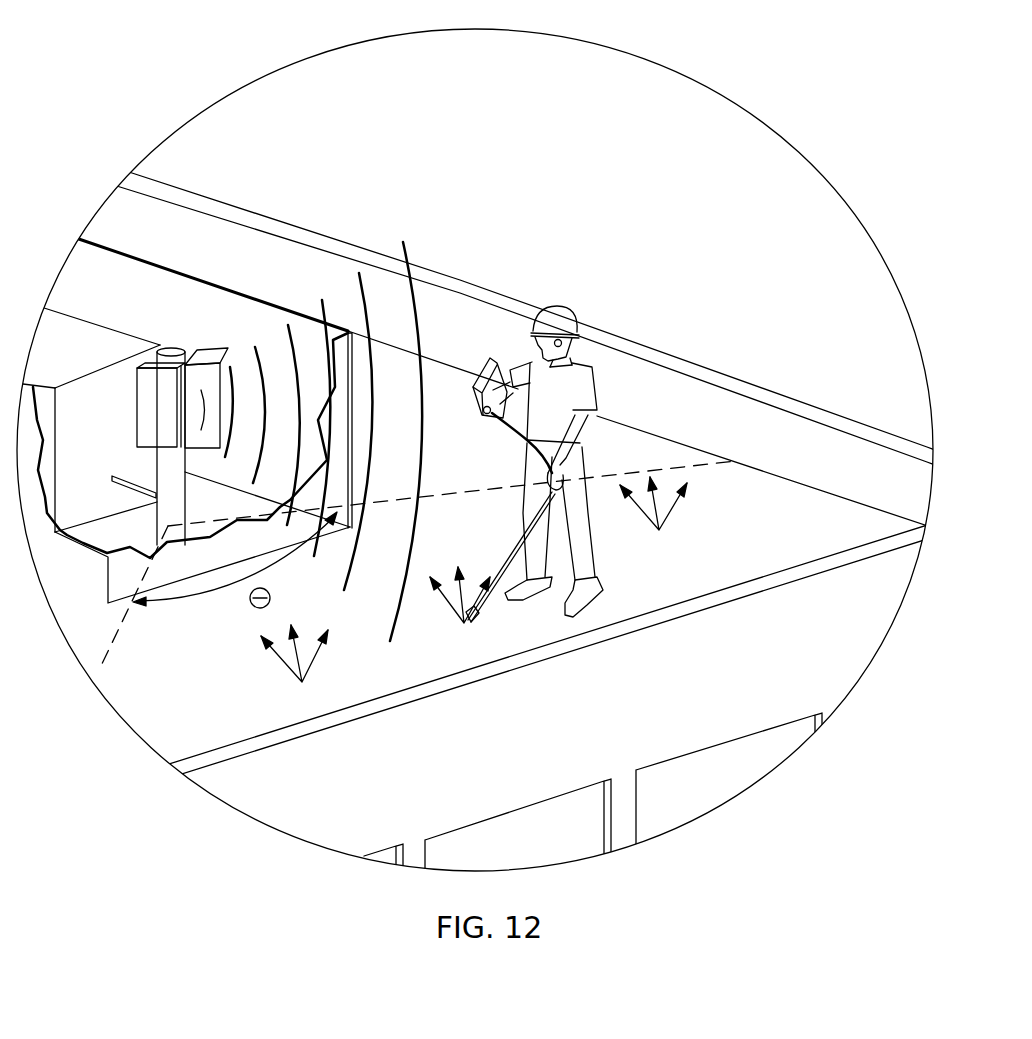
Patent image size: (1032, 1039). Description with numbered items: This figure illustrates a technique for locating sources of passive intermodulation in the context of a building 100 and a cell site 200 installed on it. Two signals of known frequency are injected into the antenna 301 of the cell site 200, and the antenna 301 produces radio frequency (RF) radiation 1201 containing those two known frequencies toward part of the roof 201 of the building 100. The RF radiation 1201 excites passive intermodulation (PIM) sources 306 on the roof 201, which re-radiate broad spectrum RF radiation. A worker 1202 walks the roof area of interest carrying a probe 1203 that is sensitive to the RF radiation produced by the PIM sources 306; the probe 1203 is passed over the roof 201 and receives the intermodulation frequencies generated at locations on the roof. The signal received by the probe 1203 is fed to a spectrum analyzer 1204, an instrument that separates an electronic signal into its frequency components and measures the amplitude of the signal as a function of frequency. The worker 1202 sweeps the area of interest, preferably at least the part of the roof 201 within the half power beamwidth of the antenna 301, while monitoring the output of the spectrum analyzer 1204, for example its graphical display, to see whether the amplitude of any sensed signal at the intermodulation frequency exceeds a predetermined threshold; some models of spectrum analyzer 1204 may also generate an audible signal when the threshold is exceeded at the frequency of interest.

The building 100 is at (205, 212).
The cell site 200 is at (194, 314).
The roof 201 is at (787, 504).
The antenna 301 is at (153, 437).
The passive intermodulation (PIM) sources 306 is at (302, 683).
The radio frequency (RF) radiation 1201 is at (393, 322).
The worker 1202 is at (576, 366).
The probe 1203 is at (458, 624).
The spectrum analyzer 1204 is at (490, 422).